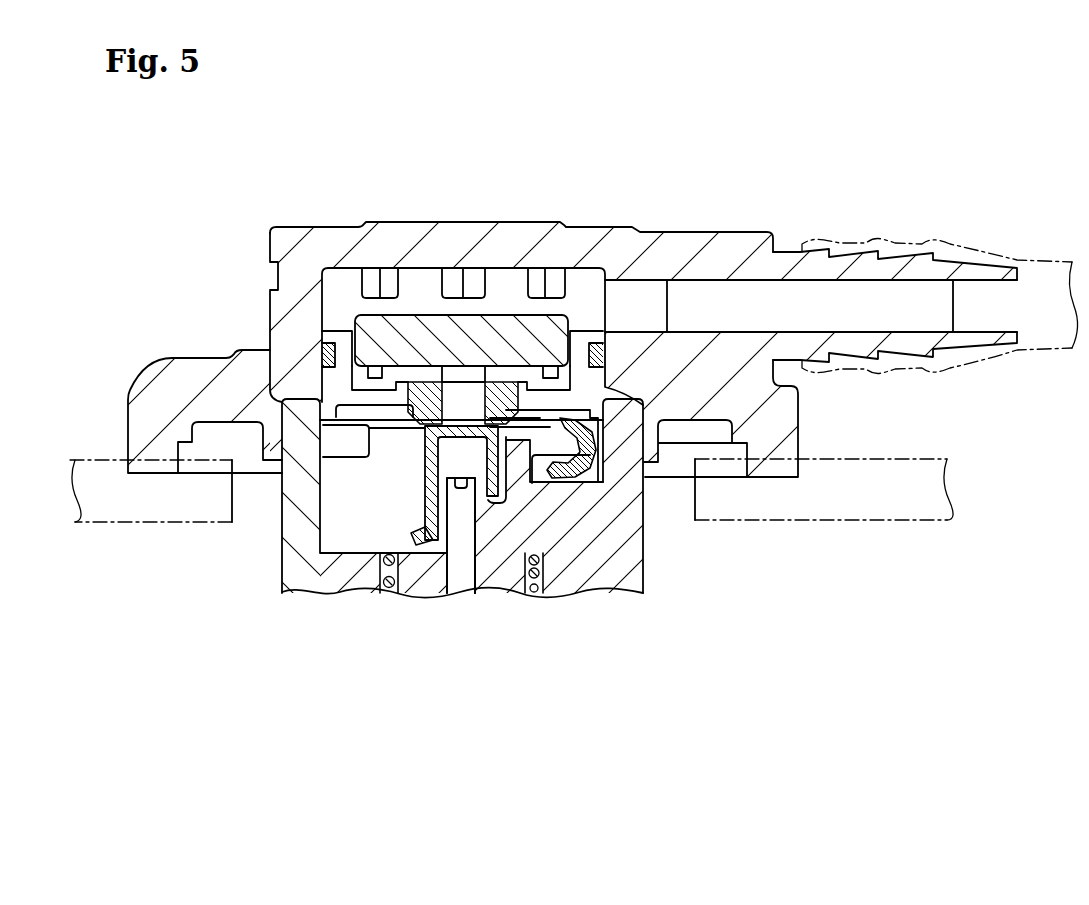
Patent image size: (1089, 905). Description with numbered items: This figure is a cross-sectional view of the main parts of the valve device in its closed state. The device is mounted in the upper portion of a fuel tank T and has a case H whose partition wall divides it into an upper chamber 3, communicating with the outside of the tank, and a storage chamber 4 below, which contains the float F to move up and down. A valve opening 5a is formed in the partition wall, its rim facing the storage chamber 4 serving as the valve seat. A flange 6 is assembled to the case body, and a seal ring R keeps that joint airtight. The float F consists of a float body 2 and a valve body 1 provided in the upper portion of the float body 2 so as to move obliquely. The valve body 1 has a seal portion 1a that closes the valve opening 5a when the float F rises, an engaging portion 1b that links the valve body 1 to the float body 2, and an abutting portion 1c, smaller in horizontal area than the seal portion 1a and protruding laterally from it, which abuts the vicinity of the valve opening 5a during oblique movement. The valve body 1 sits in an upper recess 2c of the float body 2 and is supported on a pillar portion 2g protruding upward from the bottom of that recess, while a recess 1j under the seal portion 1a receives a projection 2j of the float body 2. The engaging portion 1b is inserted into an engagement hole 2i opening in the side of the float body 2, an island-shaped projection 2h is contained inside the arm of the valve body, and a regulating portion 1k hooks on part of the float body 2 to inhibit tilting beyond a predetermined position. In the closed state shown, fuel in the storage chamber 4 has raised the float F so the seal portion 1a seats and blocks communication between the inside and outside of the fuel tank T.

The valve body 1 is at (452, 372).
The seal portion 1a is at (452, 372).
The engaging portion 1b is at (575, 470).
The abutting portion 1c is at (365, 468).
The recess 1j is at (424, 430).
The regulating portion 1k is at (417, 542).
The float body 2 is at (560, 565).
The upper recess 2c is at (400, 430).
The pillar portion 2g is at (463, 458).
The island-shaped projection 2h is at (572, 418).
The engagement hole 2i is at (550, 478).
The projection 2j is at (463, 458).
The upper chamber 3 is at (500, 268).
The storage chamber 4 is at (310, 590).
The valve opening 5a is at (463, 388).
The flange 6 is at (145, 378).
The seal ring R is at (322, 353).
The case H is at (290, 558).
The float F is at (587, 575).
The fuel tank T is at (858, 508).